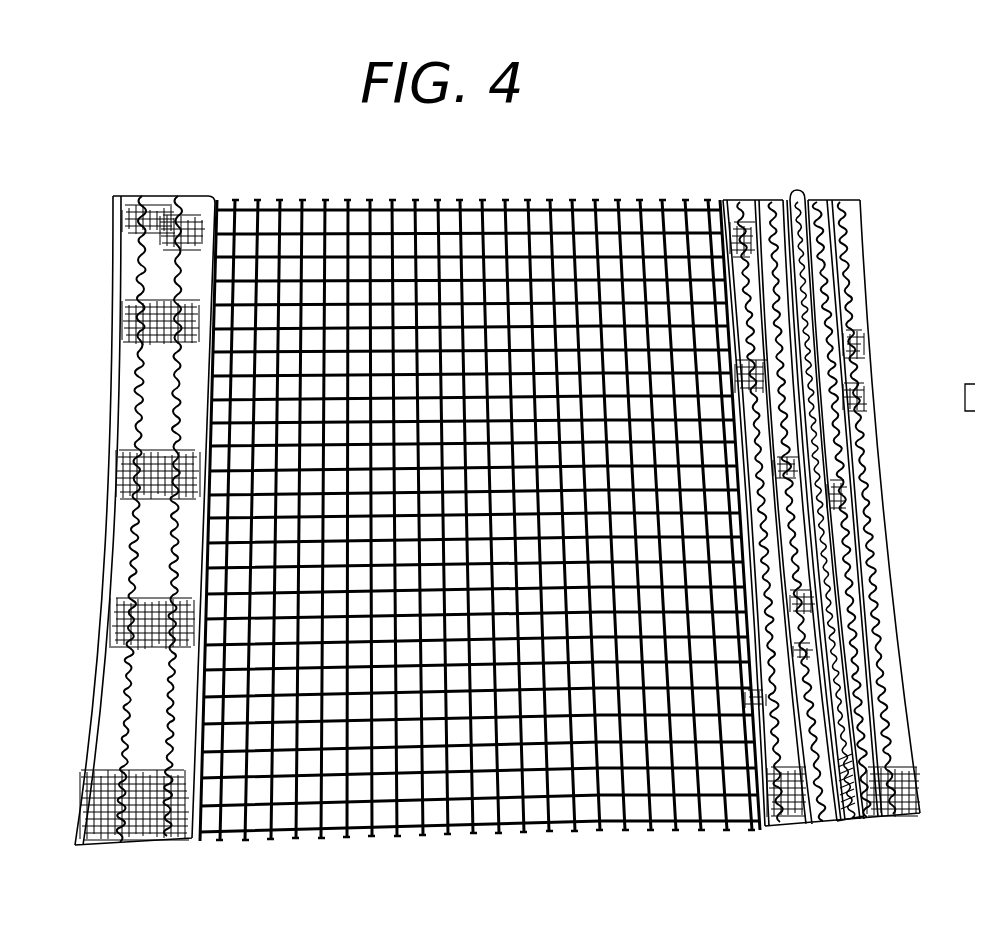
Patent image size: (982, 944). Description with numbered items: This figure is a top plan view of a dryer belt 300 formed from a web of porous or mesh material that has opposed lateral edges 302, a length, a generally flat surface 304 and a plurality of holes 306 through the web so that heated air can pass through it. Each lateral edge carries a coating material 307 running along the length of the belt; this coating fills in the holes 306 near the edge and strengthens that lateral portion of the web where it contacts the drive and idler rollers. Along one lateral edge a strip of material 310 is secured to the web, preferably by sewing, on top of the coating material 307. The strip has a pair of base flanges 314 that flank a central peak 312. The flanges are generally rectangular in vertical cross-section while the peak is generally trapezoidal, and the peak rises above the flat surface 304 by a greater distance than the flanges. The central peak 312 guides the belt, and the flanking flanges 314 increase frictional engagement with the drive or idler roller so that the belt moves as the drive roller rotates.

The dryer belt 300 is at (655, 172).
The lateral edges 302 is at (168, 203).
The generally flat surface 304 is at (300, 253).
The holes 306 is at (310, 222).
The coating material 307 is at (140, 307).
The strip of material 310 is at (815, 363).
The central peak 312 is at (815, 412).
The base flanges 314 is at (795, 552).